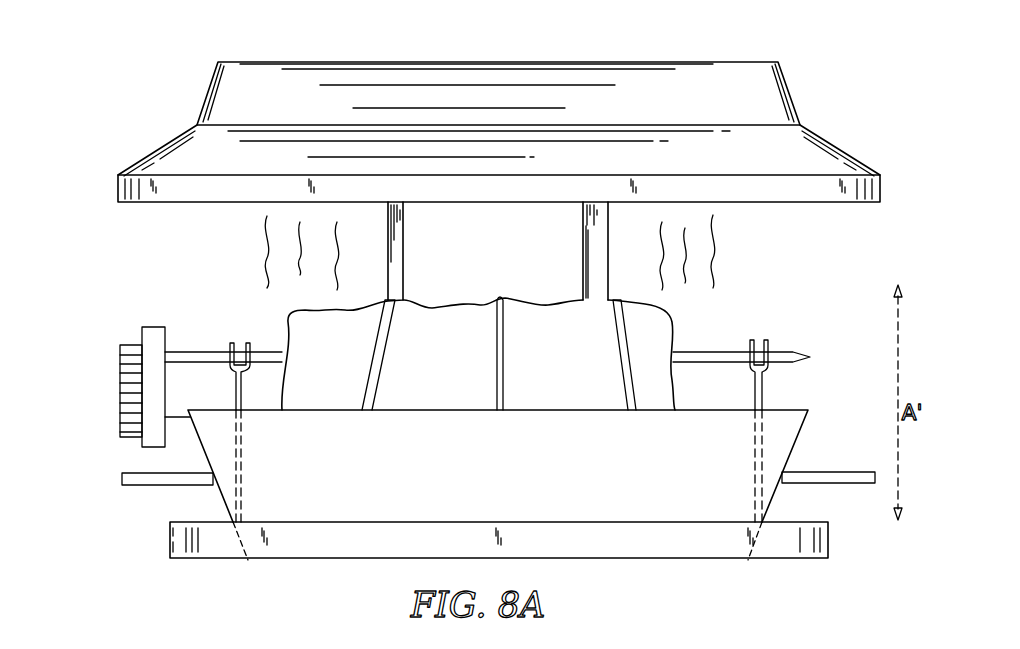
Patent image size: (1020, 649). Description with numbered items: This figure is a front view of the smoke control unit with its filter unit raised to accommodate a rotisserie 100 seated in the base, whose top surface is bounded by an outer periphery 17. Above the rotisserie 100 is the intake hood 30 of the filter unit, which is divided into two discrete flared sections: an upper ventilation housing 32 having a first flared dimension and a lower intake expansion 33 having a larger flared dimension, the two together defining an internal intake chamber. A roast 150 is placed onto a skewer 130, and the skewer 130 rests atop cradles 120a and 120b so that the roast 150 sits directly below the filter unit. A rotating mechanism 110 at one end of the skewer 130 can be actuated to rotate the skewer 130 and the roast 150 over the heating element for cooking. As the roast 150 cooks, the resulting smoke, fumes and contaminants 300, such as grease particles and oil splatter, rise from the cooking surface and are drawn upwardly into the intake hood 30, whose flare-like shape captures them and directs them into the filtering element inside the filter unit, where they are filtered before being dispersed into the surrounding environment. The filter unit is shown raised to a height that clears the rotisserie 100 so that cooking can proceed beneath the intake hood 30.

The intake hood 30 is at (731, 62).
The ventilation housing 32 is at (210, 93).
The lower intake expansion 33 is at (172, 152).
The contaminants 300 is at (265, 262).
The rotating mechanism 110 is at (135, 324).
The skewer 130 is at (195, 352).
The roast 150 is at (290, 326).
The cradle 120a is at (238, 391).
The cradle 120b is at (760, 390).
The rotisserie 100 is at (480, 490).
The outer periphery 17 is at (560, 554).